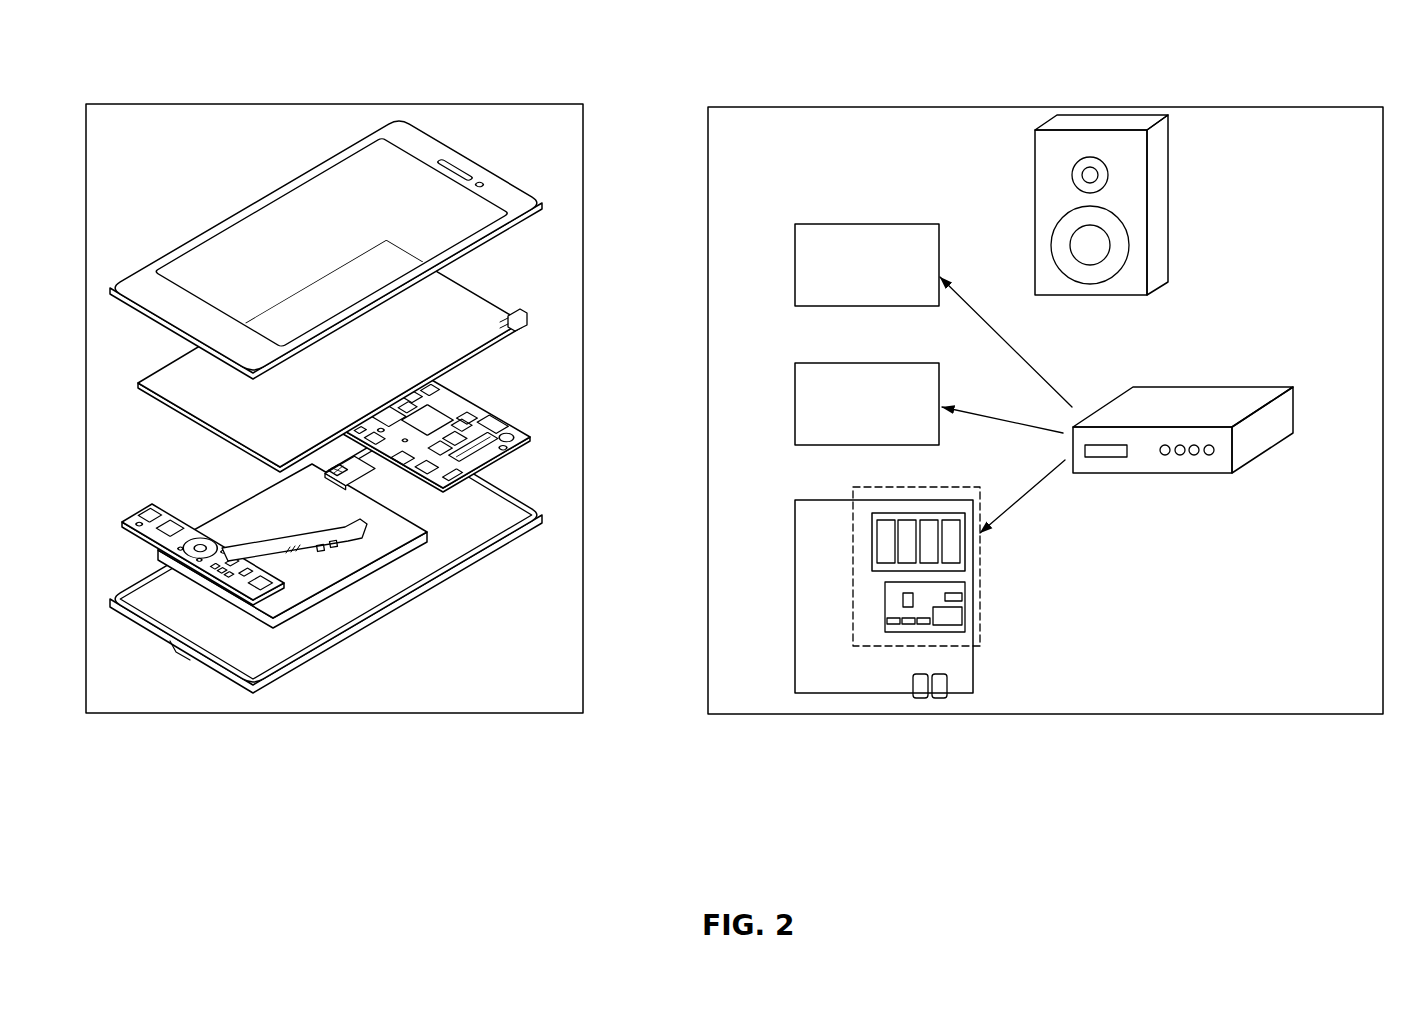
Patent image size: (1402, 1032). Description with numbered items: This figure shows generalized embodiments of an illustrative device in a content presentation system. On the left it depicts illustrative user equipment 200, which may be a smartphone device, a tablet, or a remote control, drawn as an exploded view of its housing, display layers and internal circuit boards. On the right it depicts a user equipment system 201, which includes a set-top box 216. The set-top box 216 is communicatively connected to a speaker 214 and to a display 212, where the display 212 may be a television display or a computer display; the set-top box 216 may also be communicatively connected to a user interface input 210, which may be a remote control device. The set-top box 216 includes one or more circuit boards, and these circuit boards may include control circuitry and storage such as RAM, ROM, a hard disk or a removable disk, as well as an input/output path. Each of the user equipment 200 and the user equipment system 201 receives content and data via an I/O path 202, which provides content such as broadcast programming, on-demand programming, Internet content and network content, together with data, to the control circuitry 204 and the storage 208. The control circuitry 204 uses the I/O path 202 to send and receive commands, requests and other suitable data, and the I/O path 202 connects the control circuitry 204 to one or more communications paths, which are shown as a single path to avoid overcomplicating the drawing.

The user equipment 200 is at (185, 53).
The user equipment system 201 is at (1237, 68).
The I/O path 202 is at (188, 562).
The control circuitry 204 is at (853, 613).
The storage 208 is at (872, 542).
The user interface input 210 is at (793, 263).
The display 212 is at (793, 368).
The speaker 214 is at (1033, 210).
The set-top box 216 is at (1177, 386).